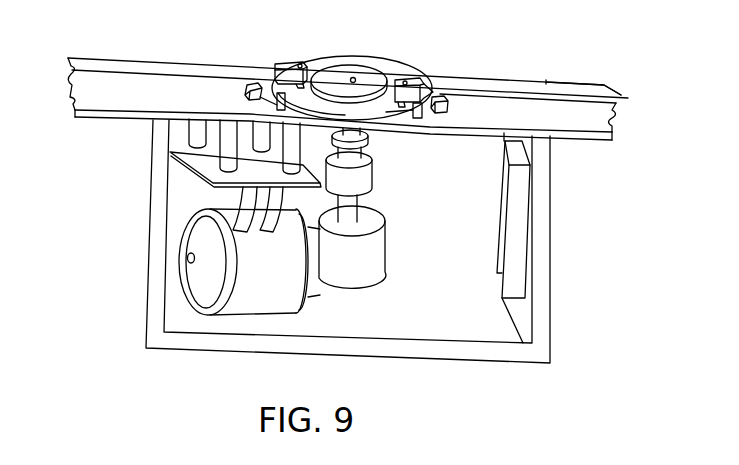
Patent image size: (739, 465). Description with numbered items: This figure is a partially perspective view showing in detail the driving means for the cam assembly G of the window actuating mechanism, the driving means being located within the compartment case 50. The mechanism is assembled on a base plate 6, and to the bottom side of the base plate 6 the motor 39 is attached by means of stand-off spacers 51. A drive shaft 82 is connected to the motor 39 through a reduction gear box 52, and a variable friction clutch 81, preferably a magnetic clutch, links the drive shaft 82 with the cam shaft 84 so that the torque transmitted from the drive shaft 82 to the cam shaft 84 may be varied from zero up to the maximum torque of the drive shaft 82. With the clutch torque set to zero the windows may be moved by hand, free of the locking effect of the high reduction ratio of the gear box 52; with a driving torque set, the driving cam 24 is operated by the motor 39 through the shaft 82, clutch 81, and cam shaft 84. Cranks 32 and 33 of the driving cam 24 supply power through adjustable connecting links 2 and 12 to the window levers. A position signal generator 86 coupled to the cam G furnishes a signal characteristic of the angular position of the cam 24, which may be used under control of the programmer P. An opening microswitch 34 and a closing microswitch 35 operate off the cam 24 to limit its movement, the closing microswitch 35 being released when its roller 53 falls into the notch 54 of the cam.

The connecting link 2 is at (167, 59).
The base plate 6 is at (68, 94).
The connecting link 12 is at (547, 84).
The driving cam assembly G is at (335, 75).
The driving cam 24 is at (370, 60).
The crank 32 is at (302, 68).
The crank 33 is at (405, 78).
The opening microswitch 34 is at (246, 92).
The closing microswitch 35 is at (450, 105).
The roller 53 is at (410, 112).
The notch 54 is at (423, 116).
The position signal generator 86 is at (370, 140).
The cam shaft 84 is at (362, 154).
The variable friction clutch 81 is at (372, 176).
The drive shaft 82 is at (360, 204).
The reduction gear box 52 is at (340, 270).
The motor 39 is at (192, 238).
The stand-off spacers 51 is at (191, 159).
The compartment case 50 is at (484, 332).
The programmer P is at (498, 184).